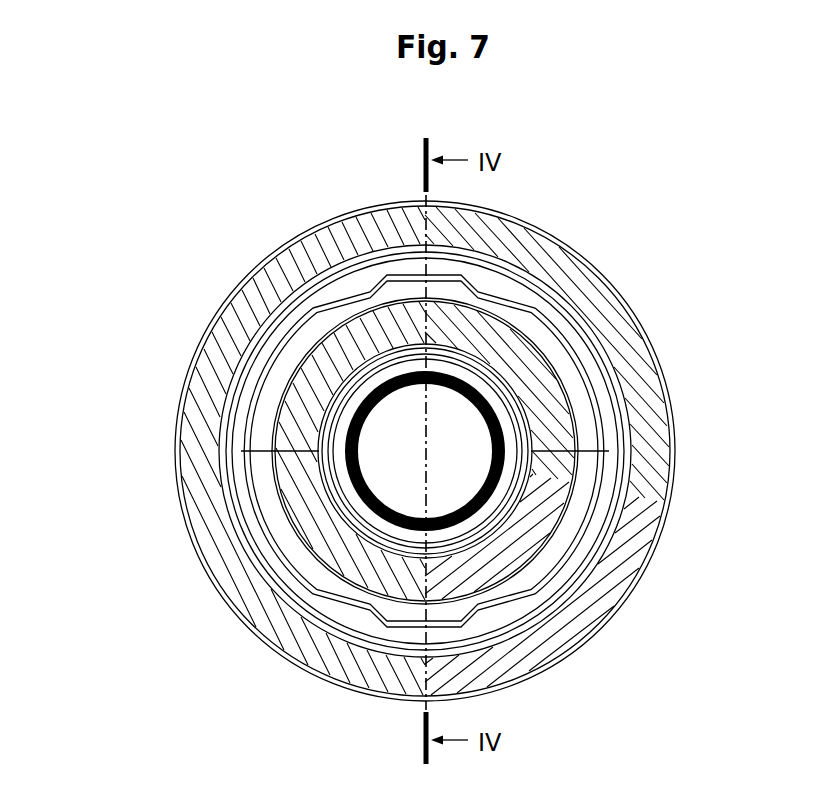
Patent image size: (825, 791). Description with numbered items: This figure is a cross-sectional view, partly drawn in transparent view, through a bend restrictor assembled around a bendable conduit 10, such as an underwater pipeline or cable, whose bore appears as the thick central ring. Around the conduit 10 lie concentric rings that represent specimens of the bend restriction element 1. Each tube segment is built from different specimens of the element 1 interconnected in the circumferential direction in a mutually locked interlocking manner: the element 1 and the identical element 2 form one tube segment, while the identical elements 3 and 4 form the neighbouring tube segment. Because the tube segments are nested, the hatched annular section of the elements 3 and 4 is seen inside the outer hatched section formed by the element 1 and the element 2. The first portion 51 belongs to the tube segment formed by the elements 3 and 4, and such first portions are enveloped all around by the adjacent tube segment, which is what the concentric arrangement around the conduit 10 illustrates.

The bend restriction element 1 is at (148, 460).
The bend restriction element specimen 2 is at (690, 437).
The bend restriction element specimen 3 is at (410, 419).
The bend restriction element specimen 4 is at (404, 503).
The first portion 51 is at (425, 451).
The bendable conduit 10 is at (425, 451).